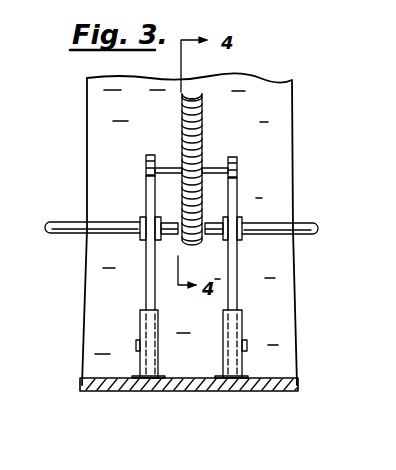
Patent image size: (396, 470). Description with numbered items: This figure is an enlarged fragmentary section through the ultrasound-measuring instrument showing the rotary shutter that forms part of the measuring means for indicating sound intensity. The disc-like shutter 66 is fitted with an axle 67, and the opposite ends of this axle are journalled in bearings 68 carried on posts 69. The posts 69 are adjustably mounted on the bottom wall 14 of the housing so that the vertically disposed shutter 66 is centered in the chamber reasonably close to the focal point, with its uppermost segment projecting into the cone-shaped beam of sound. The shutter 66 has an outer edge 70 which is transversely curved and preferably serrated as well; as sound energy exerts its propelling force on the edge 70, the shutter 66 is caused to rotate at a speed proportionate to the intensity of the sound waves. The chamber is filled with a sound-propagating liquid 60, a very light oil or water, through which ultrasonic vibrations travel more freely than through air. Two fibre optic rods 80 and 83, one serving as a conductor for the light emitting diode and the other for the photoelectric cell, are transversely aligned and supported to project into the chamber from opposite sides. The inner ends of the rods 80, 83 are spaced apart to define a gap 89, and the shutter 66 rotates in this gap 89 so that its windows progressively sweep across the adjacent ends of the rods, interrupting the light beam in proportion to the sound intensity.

The bottom wall 14 is at (188, 392).
The sound-propagating liquid 60 is at (256, 92).
The shutter 66 is at (204, 134).
The axle 67 is at (168, 167).
The bearings 68 is at (147, 160).
The posts 69 is at (143, 287).
The outer edge 70 is at (191, 97).
The fibre optic rod 80 is at (303, 223).
The fibre optic rod 83 is at (75, 222).
The gap 89 is at (176, 226).